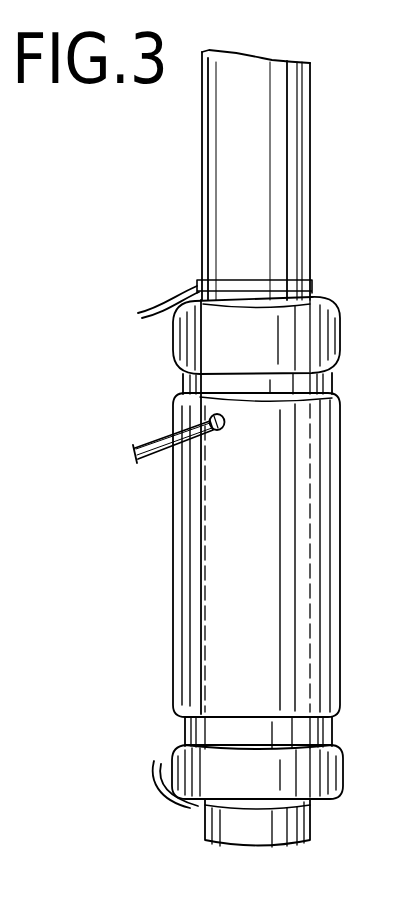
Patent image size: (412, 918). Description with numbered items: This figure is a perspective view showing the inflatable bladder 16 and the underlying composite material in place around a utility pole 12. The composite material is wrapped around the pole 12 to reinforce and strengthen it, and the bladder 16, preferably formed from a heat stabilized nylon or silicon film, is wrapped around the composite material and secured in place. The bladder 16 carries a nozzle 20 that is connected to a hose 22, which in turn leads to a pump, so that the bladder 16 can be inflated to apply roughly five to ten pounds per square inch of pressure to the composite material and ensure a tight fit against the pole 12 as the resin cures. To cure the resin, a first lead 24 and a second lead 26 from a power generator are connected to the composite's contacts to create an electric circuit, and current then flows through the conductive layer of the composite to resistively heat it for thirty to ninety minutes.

The utility pole 12 is at (295, 176).
The inflatable bladder 16 is at (334, 497).
The nozzle 20 is at (224, 420).
The hose 22 is at (150, 442).
The first lead 24 is at (150, 302).
The second lead 26 is at (158, 797).